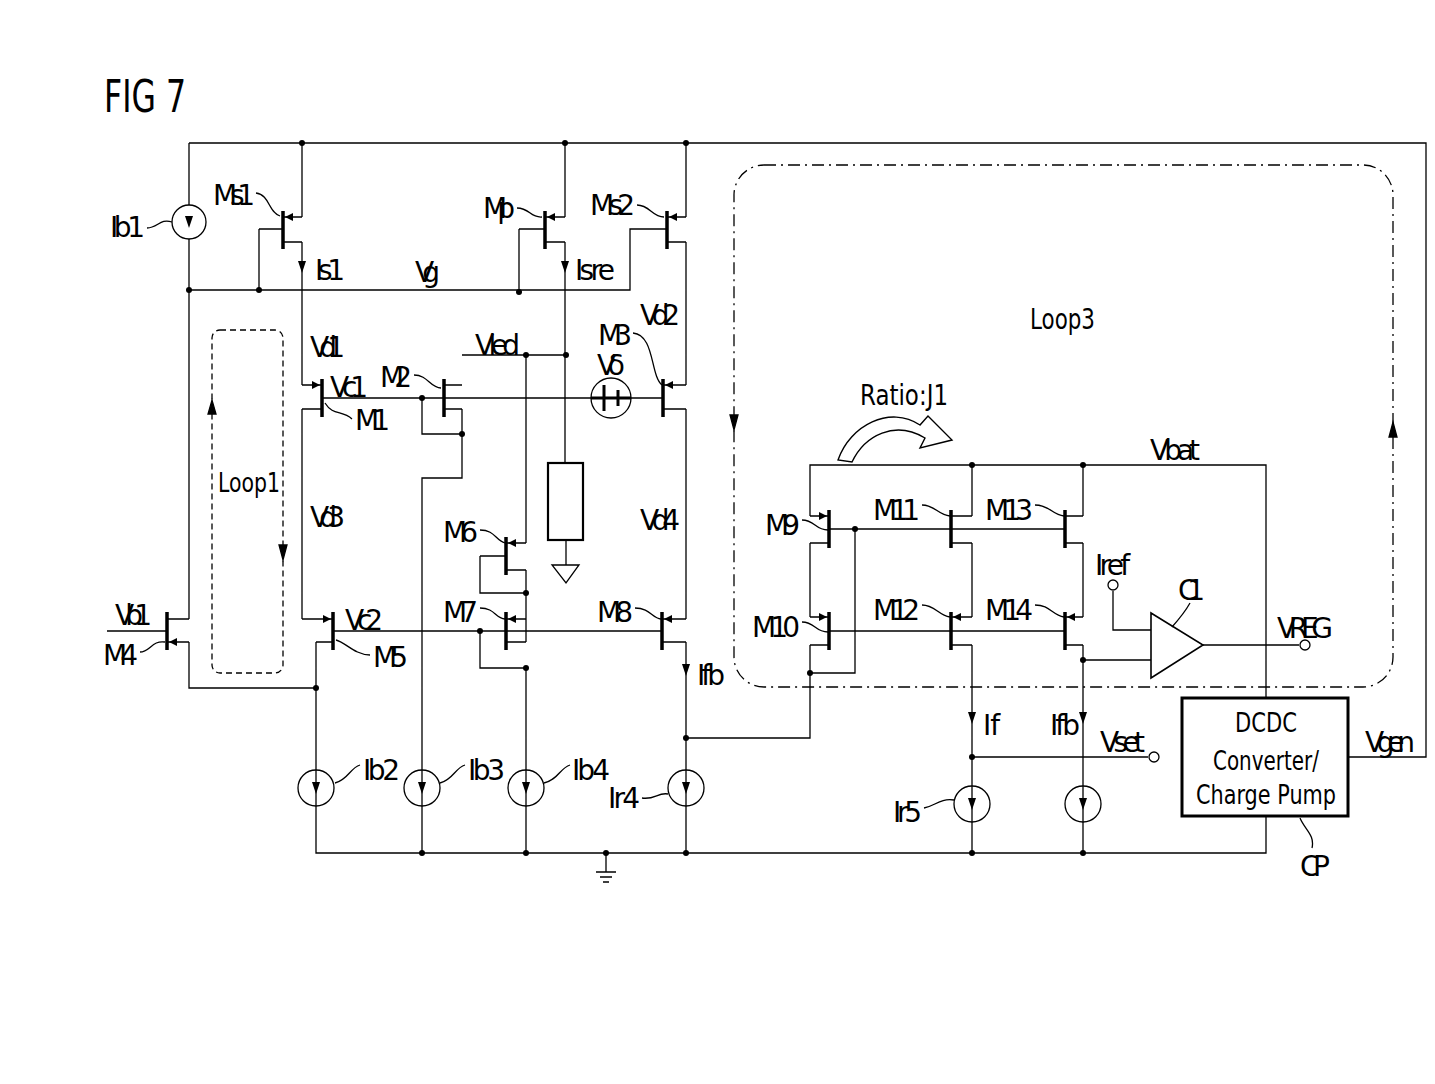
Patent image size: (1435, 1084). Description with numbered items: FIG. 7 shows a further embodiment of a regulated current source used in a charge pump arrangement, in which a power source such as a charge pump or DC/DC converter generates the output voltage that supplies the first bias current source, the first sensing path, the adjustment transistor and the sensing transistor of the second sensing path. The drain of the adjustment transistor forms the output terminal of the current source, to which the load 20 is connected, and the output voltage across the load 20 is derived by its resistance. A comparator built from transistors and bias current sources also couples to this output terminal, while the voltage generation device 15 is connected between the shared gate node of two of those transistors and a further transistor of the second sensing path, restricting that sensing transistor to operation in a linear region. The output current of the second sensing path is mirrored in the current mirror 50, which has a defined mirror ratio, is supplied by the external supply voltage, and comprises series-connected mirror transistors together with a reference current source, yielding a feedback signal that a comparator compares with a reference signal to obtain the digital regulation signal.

The voltage generation device 15 is at (611, 418).
The load 20 is at (583, 500).
The current mirror 50 is at (848, 762).